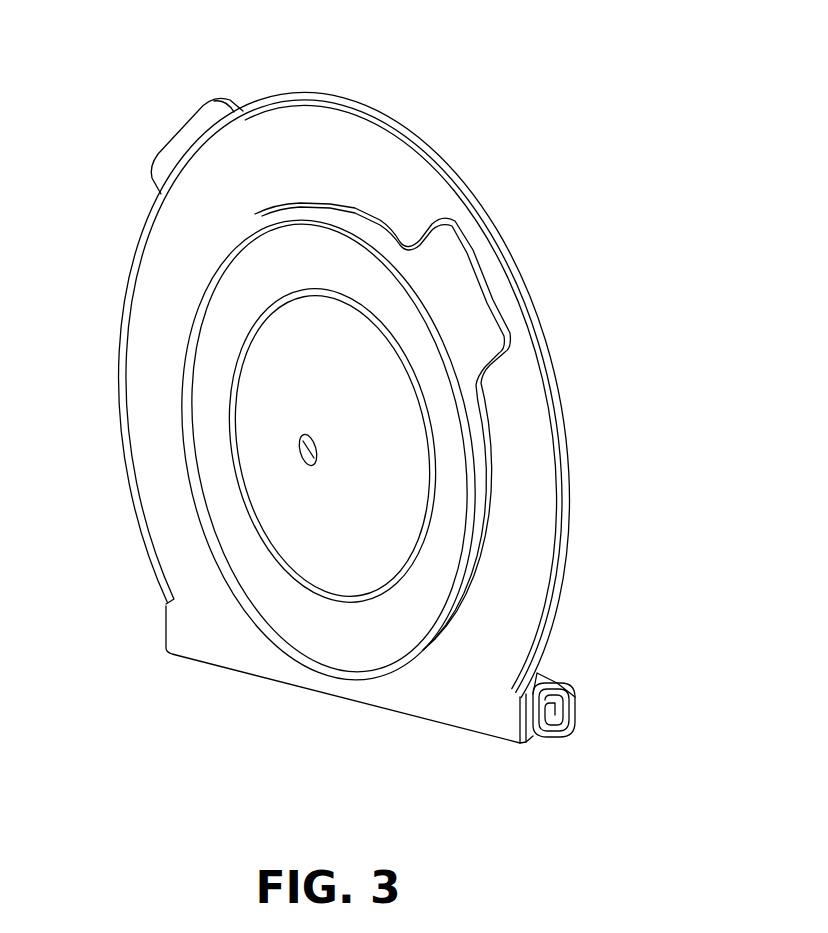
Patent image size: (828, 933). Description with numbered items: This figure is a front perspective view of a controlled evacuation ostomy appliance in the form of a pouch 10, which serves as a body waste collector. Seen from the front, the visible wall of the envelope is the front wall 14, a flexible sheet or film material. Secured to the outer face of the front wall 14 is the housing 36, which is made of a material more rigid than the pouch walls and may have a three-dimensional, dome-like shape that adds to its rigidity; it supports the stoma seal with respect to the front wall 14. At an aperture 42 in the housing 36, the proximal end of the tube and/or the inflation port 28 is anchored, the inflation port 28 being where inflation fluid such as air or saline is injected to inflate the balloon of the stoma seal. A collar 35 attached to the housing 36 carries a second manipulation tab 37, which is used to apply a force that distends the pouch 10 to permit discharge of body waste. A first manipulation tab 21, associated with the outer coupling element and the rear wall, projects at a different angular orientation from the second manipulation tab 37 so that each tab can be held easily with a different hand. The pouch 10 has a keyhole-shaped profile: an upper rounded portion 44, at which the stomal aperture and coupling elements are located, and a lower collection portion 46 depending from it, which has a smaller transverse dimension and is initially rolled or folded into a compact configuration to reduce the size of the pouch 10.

The pouch 10 is at (495, 99).
The front wall 14 is at (387, 160).
The first manipulation tab 21 is at (215, 107).
The inflation port 28 is at (300, 453).
The collar 35 is at (263, 218).
The housing 36 is at (260, 357).
The second manipulation tab 37 is at (435, 240).
The aperture 42 is at (303, 433).
The upper rounded portion 44 is at (518, 487).
The lower collection portion 46 is at (545, 738).